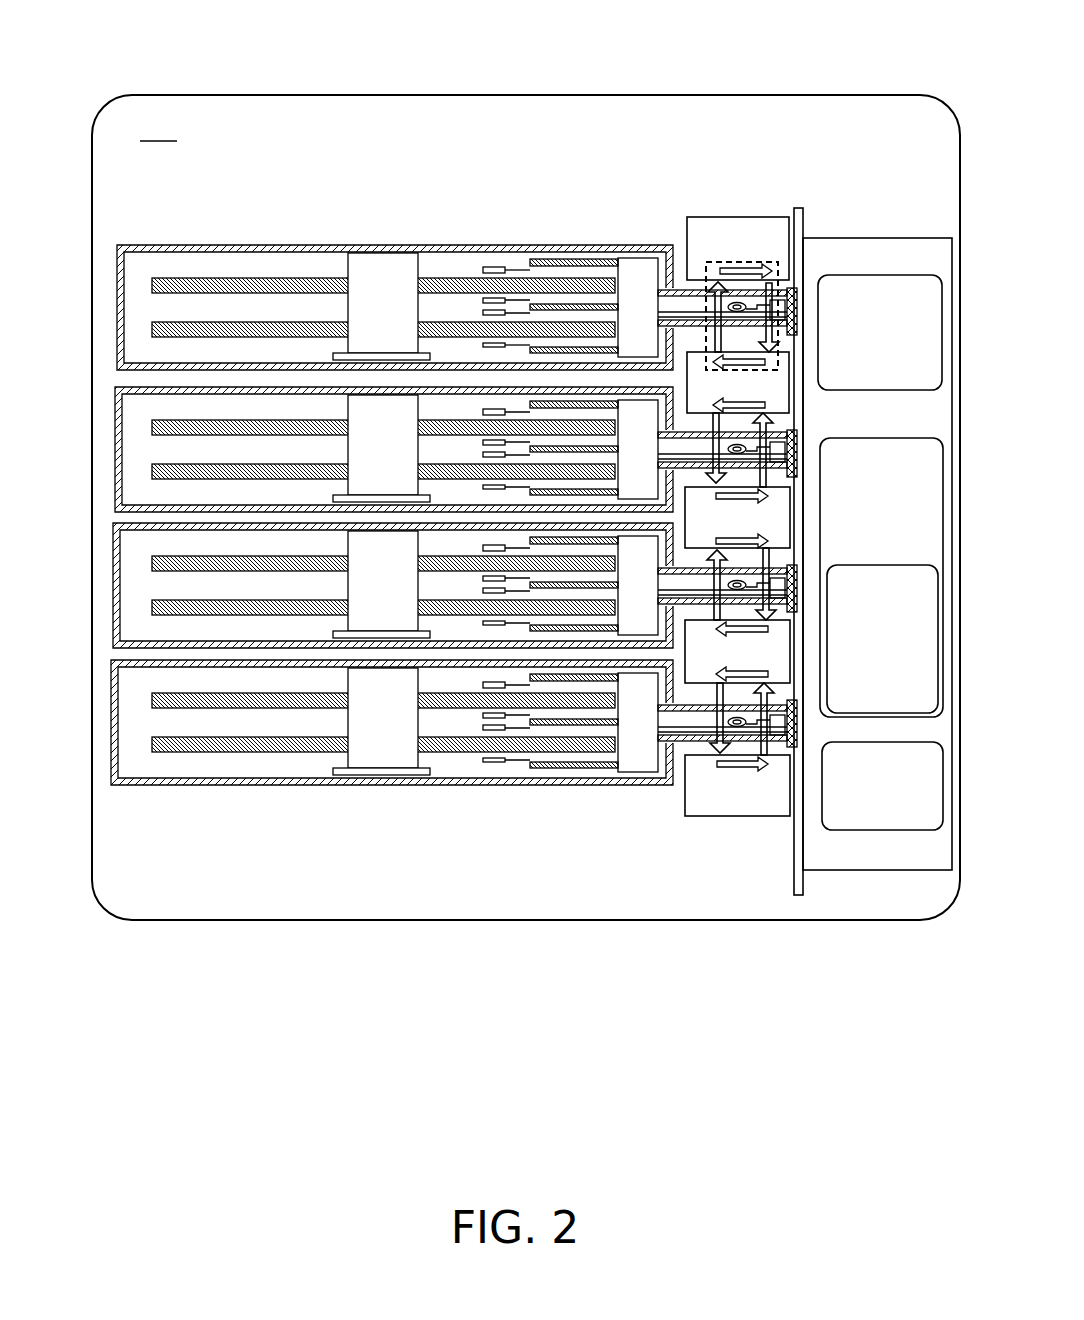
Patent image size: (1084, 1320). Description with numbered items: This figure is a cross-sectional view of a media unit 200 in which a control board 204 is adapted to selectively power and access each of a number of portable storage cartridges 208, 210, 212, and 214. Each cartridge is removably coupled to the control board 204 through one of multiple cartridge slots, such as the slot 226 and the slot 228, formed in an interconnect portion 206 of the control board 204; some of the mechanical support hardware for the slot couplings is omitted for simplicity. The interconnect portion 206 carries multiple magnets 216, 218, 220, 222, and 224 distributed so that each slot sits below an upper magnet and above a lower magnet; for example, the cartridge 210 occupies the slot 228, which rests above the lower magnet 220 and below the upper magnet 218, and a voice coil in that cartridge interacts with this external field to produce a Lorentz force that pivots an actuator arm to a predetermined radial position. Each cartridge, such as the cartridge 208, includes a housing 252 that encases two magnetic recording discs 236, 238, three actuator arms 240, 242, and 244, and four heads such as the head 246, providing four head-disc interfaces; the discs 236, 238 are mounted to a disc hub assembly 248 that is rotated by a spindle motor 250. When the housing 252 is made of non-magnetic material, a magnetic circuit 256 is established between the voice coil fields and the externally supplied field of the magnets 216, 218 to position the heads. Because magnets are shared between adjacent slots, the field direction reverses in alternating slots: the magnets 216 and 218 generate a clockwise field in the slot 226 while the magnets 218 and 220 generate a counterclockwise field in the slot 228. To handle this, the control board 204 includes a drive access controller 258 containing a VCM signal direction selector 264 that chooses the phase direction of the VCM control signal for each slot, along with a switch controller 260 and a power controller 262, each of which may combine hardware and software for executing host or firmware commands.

The media unit 200 is at (150, 62).
The control board 204 is at (830, 237).
The interconnect portion 206 is at (798, 208).
The portable storage cartridge 208 is at (414, 281).
The portable storage cartridge 210 is at (144, 446).
The portable storage cartridge 212 is at (140, 586).
The portable storage cartridge 214 is at (140, 726).
The magnet 216 is at (718, 261).
The magnet 218 is at (718, 393).
The magnet 220 is at (718, 528).
The magnet 222 is at (718, 663).
The magnet 224 is at (718, 796).
The cartridge slot 226 is at (800, 290).
The cartridge slot 228 is at (798, 440).
The magnetic recording disc 236 is at (183, 277).
The magnetic recording disc 238 is at (183, 322).
The actuator arm 240 is at (590, 263).
The actuator arm 242 is at (550, 306).
The actuator arm 244 is at (580, 352).
The head 246 is at (483, 270).
The disc hub assembly 248 is at (364, 314).
The spindle motor 250 is at (338, 358).
The housing 252 is at (203, 248).
The magnetic circuit 256 is at (706, 263).
The drive access controller 258 is at (861, 554).
The switch controller 260 is at (862, 826).
The power controller 262 is at (860, 363).
The VCM signal direction selector 264 is at (862, 709).